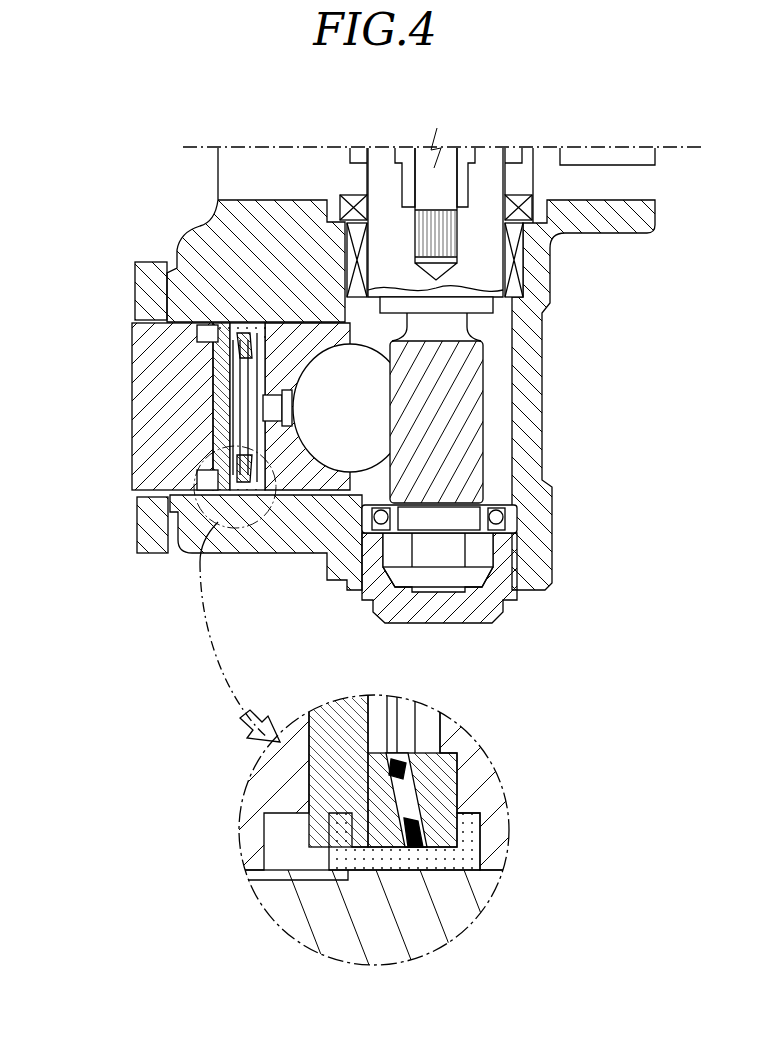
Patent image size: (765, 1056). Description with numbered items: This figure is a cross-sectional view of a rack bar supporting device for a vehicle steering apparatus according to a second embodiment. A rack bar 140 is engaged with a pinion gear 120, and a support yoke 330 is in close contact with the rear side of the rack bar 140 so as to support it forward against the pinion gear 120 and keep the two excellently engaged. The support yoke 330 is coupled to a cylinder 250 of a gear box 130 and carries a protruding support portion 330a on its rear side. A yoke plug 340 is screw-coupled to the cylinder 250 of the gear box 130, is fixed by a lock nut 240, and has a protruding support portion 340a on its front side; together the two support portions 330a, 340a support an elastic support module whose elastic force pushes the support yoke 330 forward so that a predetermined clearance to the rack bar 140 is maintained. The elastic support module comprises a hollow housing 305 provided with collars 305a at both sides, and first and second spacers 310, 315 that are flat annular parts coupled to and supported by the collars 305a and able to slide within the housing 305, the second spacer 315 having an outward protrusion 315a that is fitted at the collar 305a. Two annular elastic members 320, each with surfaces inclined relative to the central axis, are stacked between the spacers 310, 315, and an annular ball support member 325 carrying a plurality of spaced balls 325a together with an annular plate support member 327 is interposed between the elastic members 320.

The gear box 130 is at (190, 235).
The yoke plug 340 is at (150, 362).
The support portion 340a is at (212, 402).
The support yoke 330 is at (325, 335).
The support portion 330a is at (257, 345).
The lock nut 240 is at (137, 522).
The cylinder 250 is at (293, 523).
The housing 305 is at (360, 873).
The pinion gear 120 is at (468, 402).
The rack bar 140 is at (510, 500).
The elastic member 320 is at (350, 712).
The ball support member 325 is at (394, 760).
The ball 325a is at (417, 760).
The first spacer 310 is at (447, 765).
The second spacer 315 is at (308, 758).
The seat insert 315a is at (328, 775).
The collar 305a is at (467, 828).
The plate support member 327 is at (413, 860).